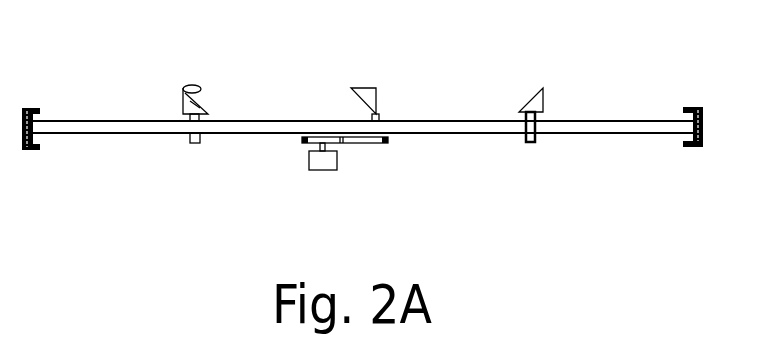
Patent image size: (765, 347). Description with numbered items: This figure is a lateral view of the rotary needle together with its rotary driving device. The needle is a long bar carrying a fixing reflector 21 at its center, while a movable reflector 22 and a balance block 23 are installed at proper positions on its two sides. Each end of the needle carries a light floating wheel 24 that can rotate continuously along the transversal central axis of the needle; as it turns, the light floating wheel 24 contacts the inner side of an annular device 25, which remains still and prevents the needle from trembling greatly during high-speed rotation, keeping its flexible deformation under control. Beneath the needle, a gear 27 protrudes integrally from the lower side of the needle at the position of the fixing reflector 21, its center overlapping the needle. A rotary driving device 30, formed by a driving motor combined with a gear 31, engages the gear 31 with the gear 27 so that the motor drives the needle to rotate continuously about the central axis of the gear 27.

The fixing reflector 21 is at (372, 87).
The movable reflector 22 is at (205, 90).
The balance block 23 is at (542, 100).
The light floating wheel 24 is at (698, 108).
The annular device 25 is at (700, 148).
The gear 27 is at (388, 143).
The rotary driving device 30 is at (327, 162).
The gear 31 is at (302, 145).